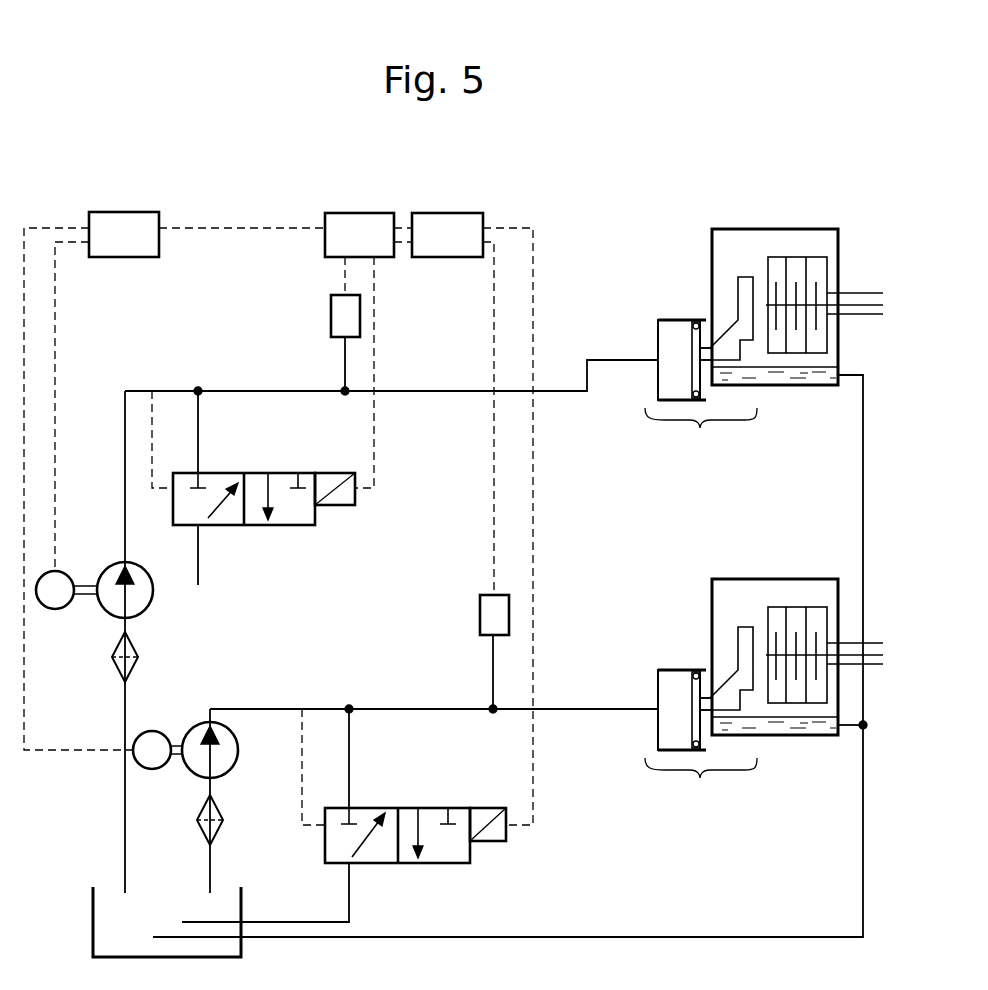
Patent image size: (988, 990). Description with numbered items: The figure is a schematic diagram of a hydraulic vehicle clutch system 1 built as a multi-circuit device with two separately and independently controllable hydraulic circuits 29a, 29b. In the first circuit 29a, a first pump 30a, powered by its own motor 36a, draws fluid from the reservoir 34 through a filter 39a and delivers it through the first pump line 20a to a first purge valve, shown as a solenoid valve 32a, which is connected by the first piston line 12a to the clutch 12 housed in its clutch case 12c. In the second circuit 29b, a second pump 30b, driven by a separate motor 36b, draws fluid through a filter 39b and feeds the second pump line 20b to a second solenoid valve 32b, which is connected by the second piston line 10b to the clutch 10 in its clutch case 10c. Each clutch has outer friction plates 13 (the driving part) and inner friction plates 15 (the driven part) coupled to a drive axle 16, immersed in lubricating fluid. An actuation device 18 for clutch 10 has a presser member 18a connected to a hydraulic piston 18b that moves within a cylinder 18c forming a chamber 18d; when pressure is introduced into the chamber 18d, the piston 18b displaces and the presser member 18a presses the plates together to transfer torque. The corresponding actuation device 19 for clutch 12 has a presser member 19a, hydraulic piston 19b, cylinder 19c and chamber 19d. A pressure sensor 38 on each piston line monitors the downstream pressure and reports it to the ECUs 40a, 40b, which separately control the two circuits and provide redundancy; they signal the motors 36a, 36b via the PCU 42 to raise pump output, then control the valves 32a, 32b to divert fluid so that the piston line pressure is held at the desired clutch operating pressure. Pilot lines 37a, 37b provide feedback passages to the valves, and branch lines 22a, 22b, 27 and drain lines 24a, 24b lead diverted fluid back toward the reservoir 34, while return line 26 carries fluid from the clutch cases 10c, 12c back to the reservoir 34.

The hydraulic clutch actuation system 1 is at (246, 184).
The clutch 10 is at (752, 210).
The second piston line 10b is at (434, 391).
The clutch case 10c is at (797, 229).
The clutch 12 is at (752, 560).
The first piston line 12a is at (613, 710).
The clutch case 12c is at (797, 579).
The outer friction plates 13 is at (808, 266).
The inner friction plates 15 is at (818, 293).
The drive axle 16 is at (867, 316).
The actuation device 18 is at (678, 354).
The presser member 18a is at (745, 279).
The hydraulic piston 18b is at (690, 336).
The cylinder 18c is at (673, 318).
The chamber 18d is at (672, 355).
The actuation device 19 is at (678, 704).
The presser member 19a is at (745, 629).
The hydraulic piston 19b is at (690, 686).
The cylinder 19c is at (673, 668).
The chamber 19d is at (672, 705).
The first pump line 20a is at (219, 708).
The second pump line 20b is at (125, 417).
The branch line to valve 22a is at (349, 767).
The branch line to valve 22b is at (198, 432).
The return line 24a is at (349, 901).
The return line 24b is at (198, 563).
The return line 26 is at (715, 937).
The pressure line 27 is at (380, 709).
The first circuit 29a is at (551, 709).
The second circuit 29b is at (239, 391).
The first pump 30a is at (238, 755).
The second pump 30b is at (150, 598).
The solenoid valve 32a is at (455, 863).
The solenoid valve 32b is at (300, 525).
The reservoir 34 is at (93, 926).
The motor 36a is at (150, 770).
The motor 36b is at (52, 610).
The pilot line 37a is at (302, 792).
The pilot line 37b is at (152, 459).
The pressure sensor 38 is at (331, 314).
The filter 39a is at (222, 827).
The filter 39b is at (114, 672).
The ECU 40a is at (379, 213).
The ECU 40b is at (466, 213).
The PCU 42 is at (142, 212).